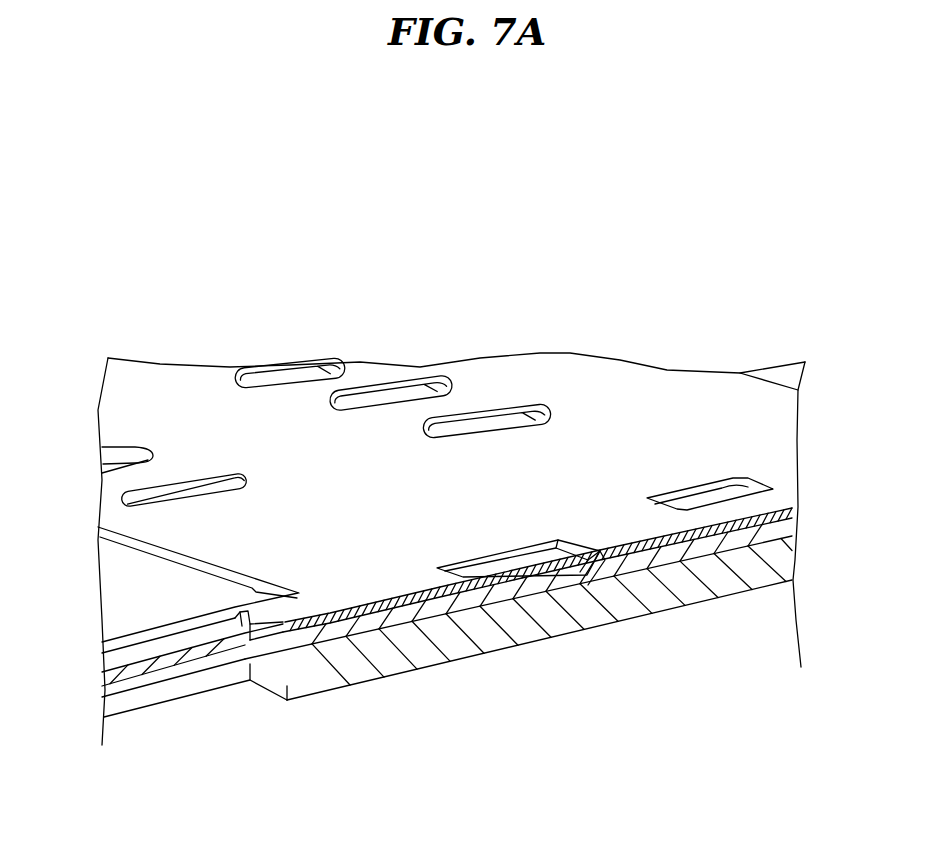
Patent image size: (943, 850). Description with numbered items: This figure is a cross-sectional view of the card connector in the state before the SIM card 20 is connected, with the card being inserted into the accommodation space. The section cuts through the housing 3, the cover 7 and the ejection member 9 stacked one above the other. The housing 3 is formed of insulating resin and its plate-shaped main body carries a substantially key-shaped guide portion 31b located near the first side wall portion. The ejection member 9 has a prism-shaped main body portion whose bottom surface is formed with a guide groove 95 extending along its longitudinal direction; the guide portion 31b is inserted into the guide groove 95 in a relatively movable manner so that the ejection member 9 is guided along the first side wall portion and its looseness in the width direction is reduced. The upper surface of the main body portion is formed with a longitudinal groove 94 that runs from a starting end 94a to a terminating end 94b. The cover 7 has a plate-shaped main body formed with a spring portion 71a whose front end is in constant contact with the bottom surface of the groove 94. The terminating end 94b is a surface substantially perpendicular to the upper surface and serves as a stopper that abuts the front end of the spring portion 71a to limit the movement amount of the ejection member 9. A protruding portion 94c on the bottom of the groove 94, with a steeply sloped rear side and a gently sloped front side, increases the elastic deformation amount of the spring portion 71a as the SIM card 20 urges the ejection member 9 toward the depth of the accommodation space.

The cover 7 is at (570, 382).
The SIM card 20 is at (122, 595).
The starting end 94a is at (263, 622).
The protruding portion 94c is at (380, 612).
The groove 94 is at (455, 600).
The spring portion 71a is at (522, 566).
The terminating end 94b is at (573, 560).
The housing 3 is at (517, 652).
The guide portion 31b is at (353, 650).
The guide groove 95 is at (222, 668).
The ejection member 9 is at (187, 708).